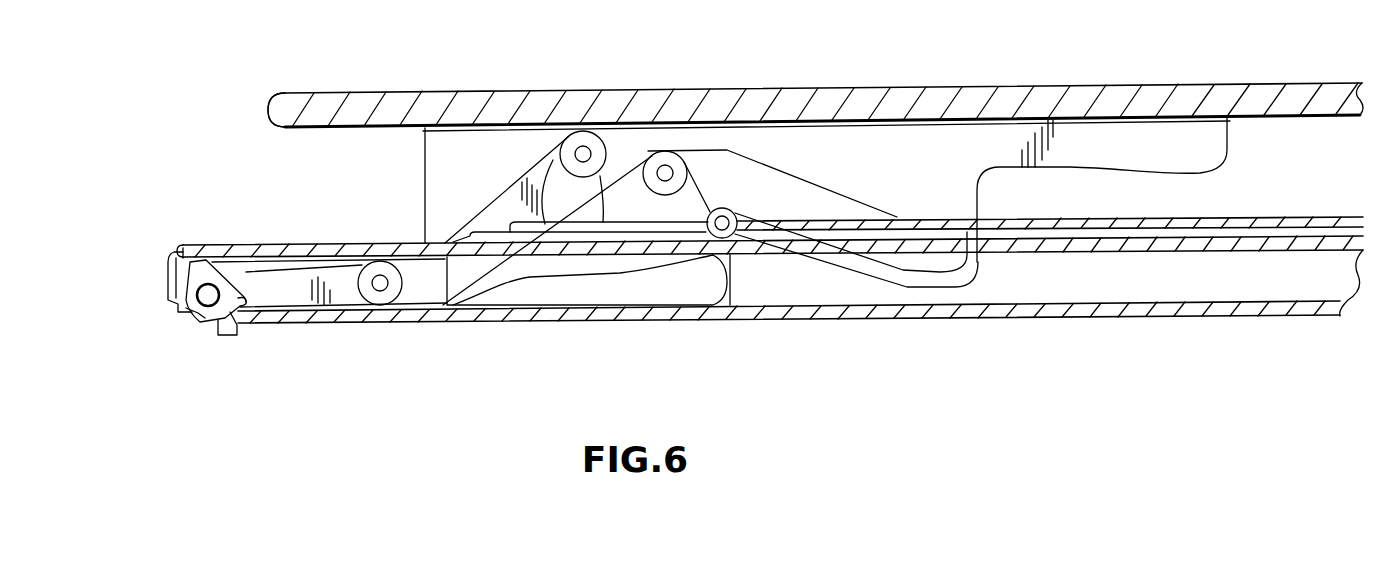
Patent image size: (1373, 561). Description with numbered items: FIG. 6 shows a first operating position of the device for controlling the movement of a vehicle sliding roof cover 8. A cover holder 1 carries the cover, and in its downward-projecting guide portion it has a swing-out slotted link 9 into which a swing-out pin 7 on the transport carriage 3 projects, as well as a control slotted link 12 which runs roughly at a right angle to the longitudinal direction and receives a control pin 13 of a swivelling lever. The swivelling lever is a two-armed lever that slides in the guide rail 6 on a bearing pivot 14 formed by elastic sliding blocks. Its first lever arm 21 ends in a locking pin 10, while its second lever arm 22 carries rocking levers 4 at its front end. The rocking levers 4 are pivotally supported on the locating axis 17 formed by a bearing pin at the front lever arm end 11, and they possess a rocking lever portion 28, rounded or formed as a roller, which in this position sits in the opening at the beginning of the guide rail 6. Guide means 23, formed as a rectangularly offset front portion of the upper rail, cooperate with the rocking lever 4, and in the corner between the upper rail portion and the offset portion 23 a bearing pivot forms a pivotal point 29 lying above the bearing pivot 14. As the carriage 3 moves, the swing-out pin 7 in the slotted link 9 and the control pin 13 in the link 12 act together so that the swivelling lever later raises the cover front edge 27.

The cover holder 1 is at (918, 145).
The carriage 3 is at (620, 195).
The rocking lever 4 is at (247, 272).
The guide rail 6 is at (1110, 318).
The swing-out pin 7 is at (672, 152).
The sliding roof cover 8 is at (1055, 110).
The swing-out slotted link 9 is at (803, 193).
The locking pin 10 is at (733, 234).
The front lever arm end 11 is at (157, 317).
The control slotted link 12 is at (537, 168).
The control pin 13 is at (577, 132).
The bearing pivot 14 is at (378, 305).
The locating axis 17 is at (208, 305).
The first lever arm 21 is at (568, 265).
The second lever arm 22 is at (305, 300).
The offset rail portion 23 is at (171, 278).
The cover front edge 27 is at (268, 108).
The rocking lever portion 28 is at (198, 313).
The pivotal point 29 is at (182, 247).